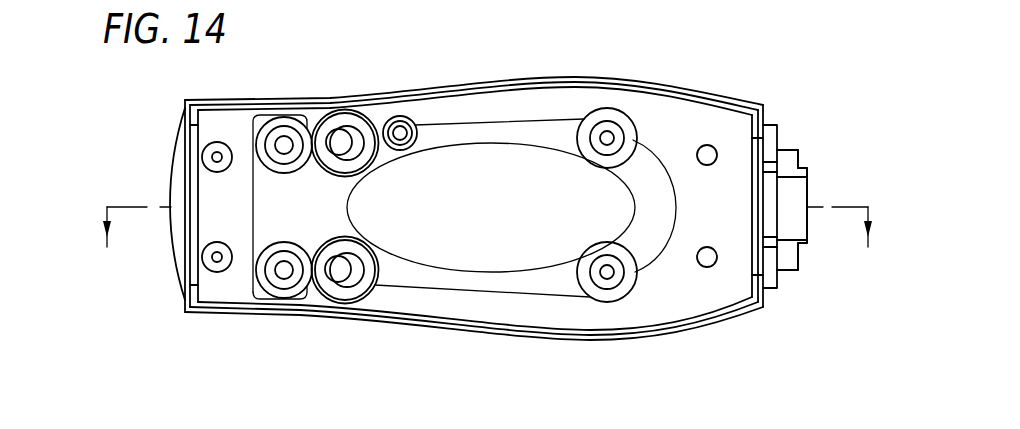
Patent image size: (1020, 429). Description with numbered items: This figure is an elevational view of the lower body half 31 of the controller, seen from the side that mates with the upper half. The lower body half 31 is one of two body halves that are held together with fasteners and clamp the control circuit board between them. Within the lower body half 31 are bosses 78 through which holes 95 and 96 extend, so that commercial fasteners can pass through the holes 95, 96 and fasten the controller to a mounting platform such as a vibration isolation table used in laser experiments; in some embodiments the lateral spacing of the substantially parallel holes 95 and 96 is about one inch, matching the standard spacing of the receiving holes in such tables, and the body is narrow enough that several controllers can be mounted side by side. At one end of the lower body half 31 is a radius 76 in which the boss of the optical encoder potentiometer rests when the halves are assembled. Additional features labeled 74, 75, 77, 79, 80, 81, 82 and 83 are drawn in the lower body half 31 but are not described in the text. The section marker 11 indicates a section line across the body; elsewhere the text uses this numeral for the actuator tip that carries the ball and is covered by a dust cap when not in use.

The lower body half 31 is at (655, 78).
The mounting hole 74 is at (706, 146).
The mounting hole 75 is at (707, 262).
The radius 76 is at (793, 223).
The boss 77 is at (398, 117).
The bosses 78 is at (344, 118).
The boss 79 is at (285, 125).
The mounting hole 80 is at (202, 157).
The mounting hole 81 is at (202, 258).
The boss 82 is at (607, 292).
The boss 83 is at (598, 133).
The hole 95 is at (354, 140).
The hole 96 is at (345, 278).
The actuator tip 11 is at (493, 251).